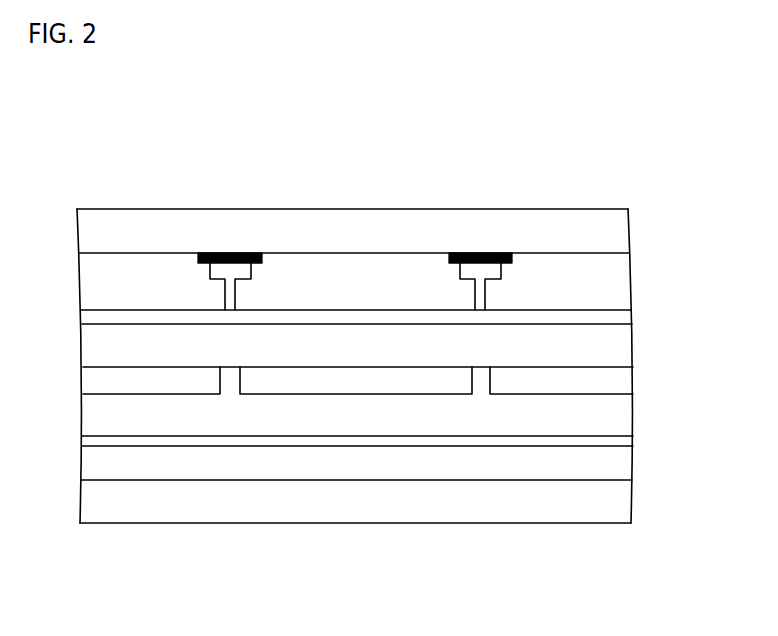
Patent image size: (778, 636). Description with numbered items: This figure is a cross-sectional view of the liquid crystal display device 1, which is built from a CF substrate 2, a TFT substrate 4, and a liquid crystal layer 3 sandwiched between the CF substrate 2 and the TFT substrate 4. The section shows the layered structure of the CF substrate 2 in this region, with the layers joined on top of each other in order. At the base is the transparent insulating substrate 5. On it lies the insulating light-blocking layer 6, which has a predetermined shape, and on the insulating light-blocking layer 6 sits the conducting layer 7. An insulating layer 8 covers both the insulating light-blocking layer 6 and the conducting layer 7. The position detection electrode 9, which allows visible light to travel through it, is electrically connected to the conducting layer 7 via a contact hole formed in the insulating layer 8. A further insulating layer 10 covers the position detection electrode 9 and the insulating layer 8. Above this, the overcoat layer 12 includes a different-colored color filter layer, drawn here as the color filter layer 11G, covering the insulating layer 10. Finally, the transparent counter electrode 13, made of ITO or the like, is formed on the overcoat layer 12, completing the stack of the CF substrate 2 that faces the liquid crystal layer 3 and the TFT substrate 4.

The liquid crystal display device 1 is at (606, 170).
The CF substrate 2 is at (700, 212).
The liquid crystal layer 3 is at (620, 465).
The TFT substrate 4 is at (620, 500).
The transparent insulating substrate 5 is at (620, 234).
The insulating light-blocking layer 6 is at (232, 253).
The conducting layer 7 is at (248, 270).
The insulating layer 8 is at (620, 282).
The position detection electrode 9 is at (620, 318).
The insulating layer 10 is at (620, 349).
The color filter layer 11G is at (182, 385).
The overcoat layer 12 is at (620, 415).
The transparent counter electrode 13 is at (620, 442).